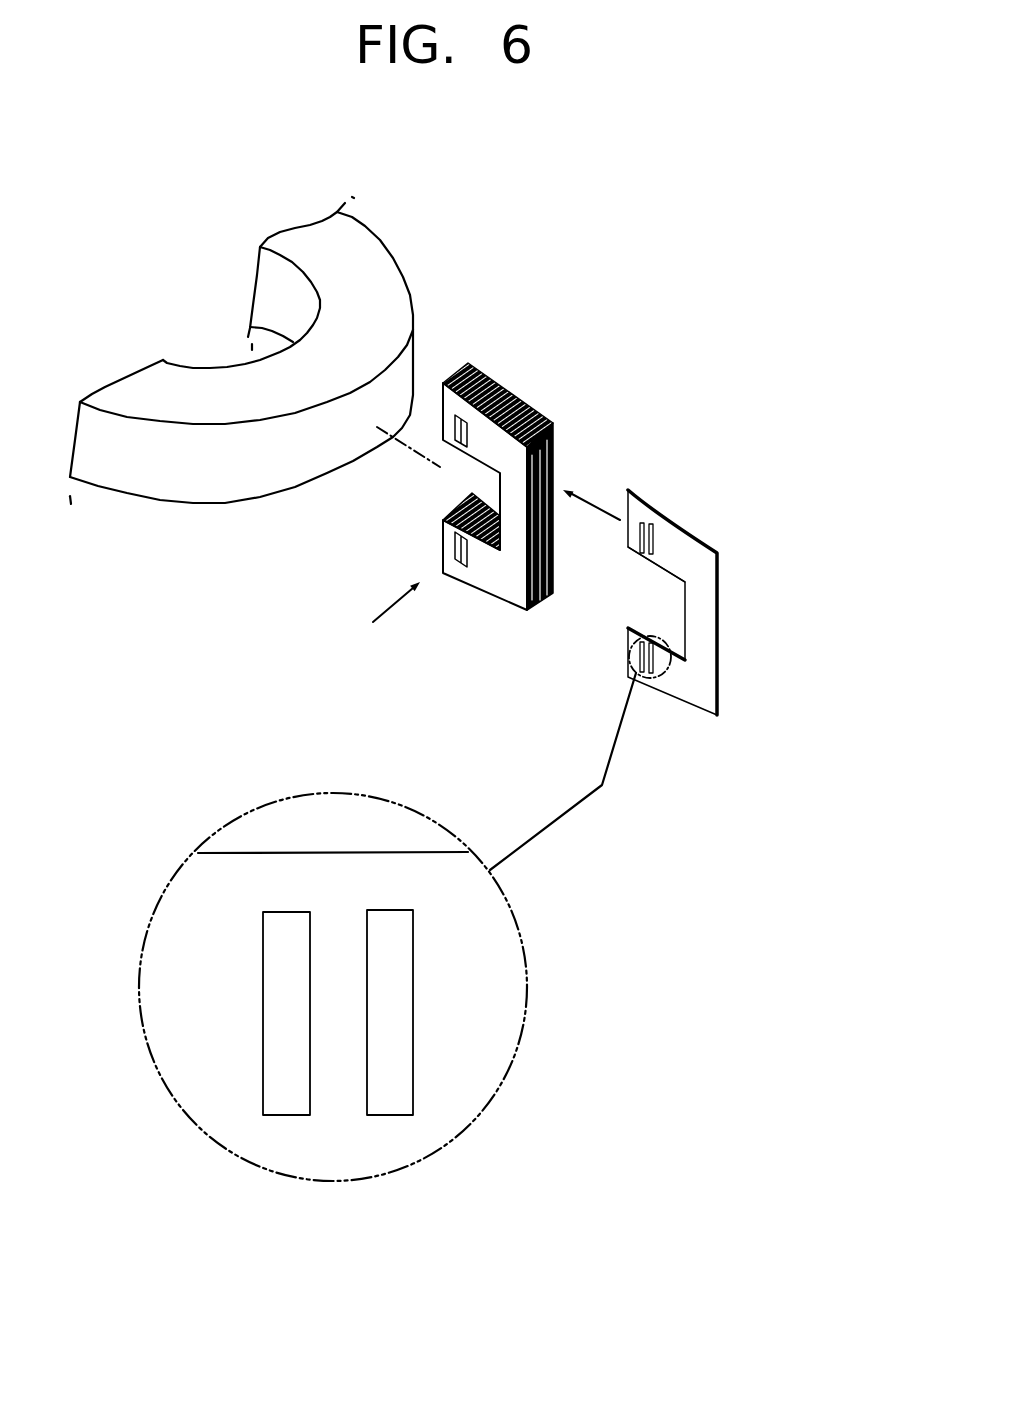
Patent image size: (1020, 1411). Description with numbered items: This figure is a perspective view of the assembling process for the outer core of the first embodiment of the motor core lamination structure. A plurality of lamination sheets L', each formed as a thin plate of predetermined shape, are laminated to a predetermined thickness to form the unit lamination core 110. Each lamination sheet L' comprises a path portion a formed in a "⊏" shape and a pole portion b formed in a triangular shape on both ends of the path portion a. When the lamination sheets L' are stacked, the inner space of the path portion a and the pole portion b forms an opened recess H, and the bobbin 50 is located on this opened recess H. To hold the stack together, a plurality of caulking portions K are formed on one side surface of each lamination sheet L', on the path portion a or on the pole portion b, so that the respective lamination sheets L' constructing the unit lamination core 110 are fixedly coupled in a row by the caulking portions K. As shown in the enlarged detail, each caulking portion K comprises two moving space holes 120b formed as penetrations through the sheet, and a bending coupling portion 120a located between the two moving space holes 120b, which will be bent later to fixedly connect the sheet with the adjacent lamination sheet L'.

The bobbin 50 is at (437, 287).
The unit lamination core 110 is at (549, 382).
The opened recess H is at (455, 484).
The lamination sheet L' is at (634, 589).
The path portion a is at (705, 633).
The pole portion b is at (624, 520).
The caulking portion K is at (494, 673).
The bending coupling portion 120a is at (345, 1038).
The moving space hole 120b is at (282, 1107).